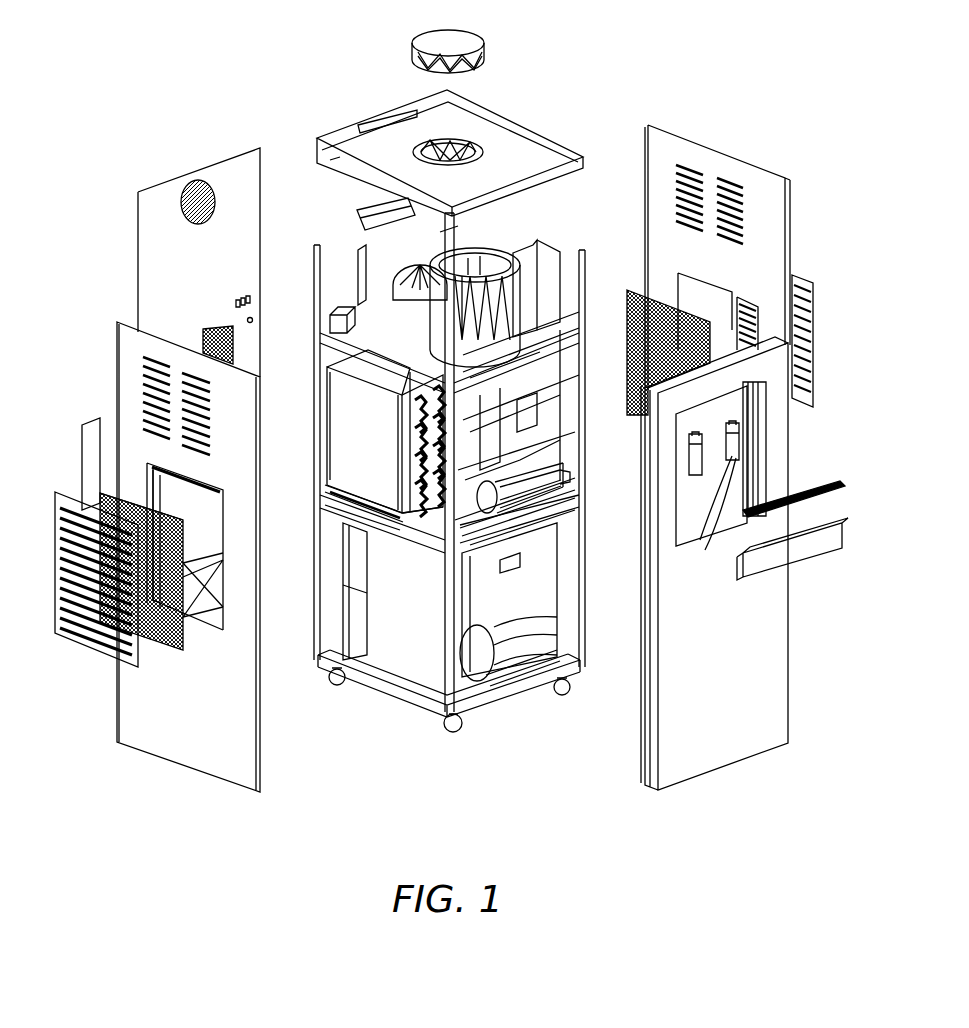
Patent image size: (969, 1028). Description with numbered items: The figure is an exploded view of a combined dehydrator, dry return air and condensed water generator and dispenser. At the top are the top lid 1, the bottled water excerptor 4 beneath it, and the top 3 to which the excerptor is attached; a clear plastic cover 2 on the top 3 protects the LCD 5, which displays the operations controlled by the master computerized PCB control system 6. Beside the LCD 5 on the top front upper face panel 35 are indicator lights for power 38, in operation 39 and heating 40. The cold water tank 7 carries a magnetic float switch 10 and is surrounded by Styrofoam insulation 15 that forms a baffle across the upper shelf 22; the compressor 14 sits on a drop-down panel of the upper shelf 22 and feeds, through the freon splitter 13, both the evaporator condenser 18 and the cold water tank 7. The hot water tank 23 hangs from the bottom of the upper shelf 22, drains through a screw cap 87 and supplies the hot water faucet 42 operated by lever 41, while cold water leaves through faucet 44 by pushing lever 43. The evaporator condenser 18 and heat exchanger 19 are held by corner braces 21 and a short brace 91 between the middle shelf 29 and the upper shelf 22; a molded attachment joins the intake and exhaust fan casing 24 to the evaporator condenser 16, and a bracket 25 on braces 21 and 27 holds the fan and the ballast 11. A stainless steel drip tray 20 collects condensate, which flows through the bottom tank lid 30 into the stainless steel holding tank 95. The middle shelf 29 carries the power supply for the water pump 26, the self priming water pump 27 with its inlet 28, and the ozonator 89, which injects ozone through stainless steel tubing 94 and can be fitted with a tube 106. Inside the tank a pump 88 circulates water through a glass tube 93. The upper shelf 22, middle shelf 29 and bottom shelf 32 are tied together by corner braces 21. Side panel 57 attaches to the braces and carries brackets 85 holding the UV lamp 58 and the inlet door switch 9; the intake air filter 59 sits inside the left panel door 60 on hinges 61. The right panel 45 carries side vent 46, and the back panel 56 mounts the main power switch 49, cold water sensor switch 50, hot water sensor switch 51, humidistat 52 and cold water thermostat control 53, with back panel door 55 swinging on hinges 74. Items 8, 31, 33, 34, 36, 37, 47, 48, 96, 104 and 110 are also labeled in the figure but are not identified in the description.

The top lid 1 is at (455, 43).
The plastic cover 2 is at (362, 118).
The top 3 is at (465, 122).
The bottled water excerptor 4 is at (472, 146).
The LCD 5 is at (365, 211).
The master computerized PCB control system 6 is at (368, 227).
The cold water tank 7 is at (497, 271).
The fan motor 8 is at (398, 274).
The UV lamp inlet door off/on switch 9 is at (84, 430).
The magnetic float switch 10 is at (500, 262).
The ballast 11 is at (545, 400).
The freon splitter 13 is at (331, 321).
The compressor 14 is at (456, 232).
The Styrofoam insulation 15 is at (522, 302).
The evaporator condenser 16 is at (348, 397).
The evaporator condenser 18 is at (326, 420).
The heat exchanger 19 is at (410, 466).
The stainless steel drip tray 20 is at (340, 484).
The corner braces 21 is at (455, 215).
The upper shelf 22 is at (545, 335).
The hot water tank 23 is at (540, 352).
The intake and exhaust fan casing 24 is at (556, 366).
The bracket 25 is at (522, 432).
The power supply for the water pump 26 is at (555, 450).
The self priming water pump 27 is at (562, 470).
The water pump inlet 28 is at (566, 475).
The middle shelf 29 is at (556, 496).
The bottom tank lid 30 is at (538, 605).
The lower side panel 31 is at (356, 605).
The bottom shelf 32 is at (412, 700).
The casters 33 is at (333, 680).
The front door 34 is at (770, 690).
The top front upper face panel 35 is at (762, 458).
The door strip 36 is at (828, 500).
The door tray 37 is at (845, 538).
The power indicator light 38 is at (748, 362).
The in operation indicator light 39 is at (748, 374).
The heating indicator light 40 is at (748, 386).
The lever 41 is at (693, 470).
The hot water dispensing faucet 42 is at (700, 468).
The lever 43 is at (730, 458).
The cold-water faucet 44 is at (737, 462).
The right panel 45 is at (740, 160).
The side vent 46 is at (805, 278).
The filter pad 47 is at (642, 300).
The rear left panel 48 is at (205, 170).
The main power off/on switch 49 is at (249, 296).
The cold water sensor off/on switch 50 is at (244, 298).
The hot water sensor switch 51 is at (239, 300).
The humidistat 52 is at (250, 322).
The cold water thermostat control 53 is at (248, 354).
The back panel door 55 is at (117, 380).
The back panel 56 is at (200, 560).
The side panel 57 is at (117, 340).
The UV lamp 58 is at (220, 500).
The intake air filter 59 is at (108, 495).
The left panel door 60 is at (101, 500).
The hinges 61 is at (58, 528).
The hinges 74 is at (222, 520).
The brackets 85 is at (332, 496).
The screw on and off cap 87 is at (560, 408).
The pump 88 is at (562, 675).
The ozonator 89 is at (556, 506).
The short brace 91 is at (372, 522).
The glass tube 93 is at (560, 656).
The stainless steel tubing 94 is at (556, 516).
The stainless steel holding tank 95 is at (362, 622).
The blower 96 is at (500, 640).
The grille 104 is at (57, 500).
The tube 106 is at (520, 562).
The plate 110 is at (533, 396).